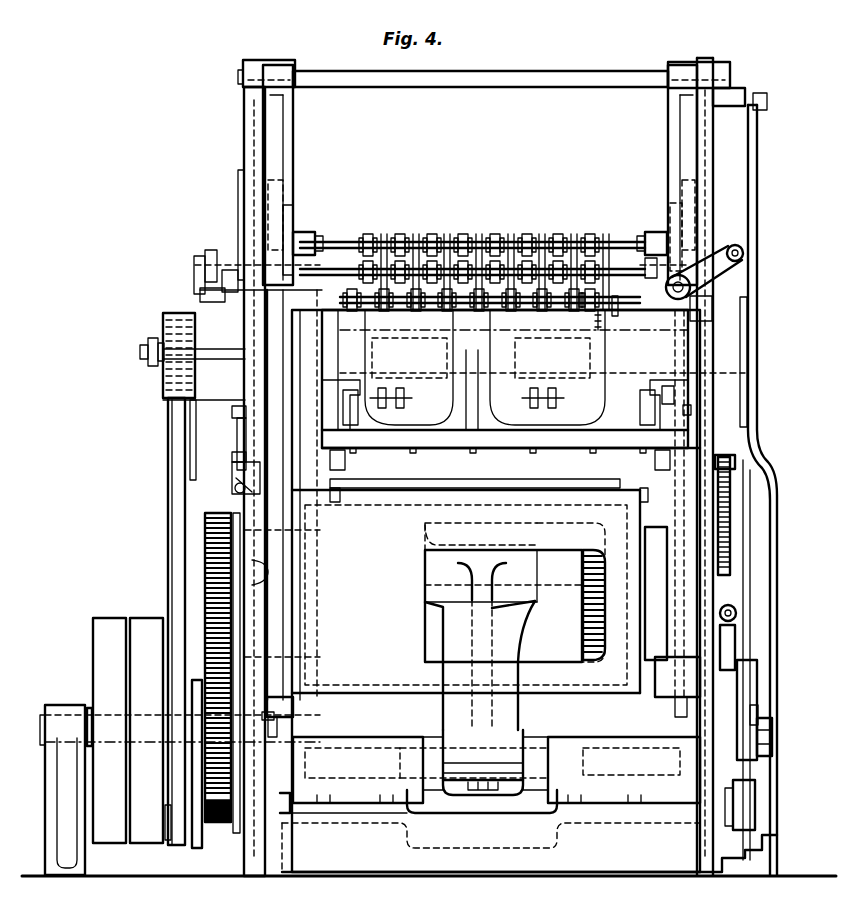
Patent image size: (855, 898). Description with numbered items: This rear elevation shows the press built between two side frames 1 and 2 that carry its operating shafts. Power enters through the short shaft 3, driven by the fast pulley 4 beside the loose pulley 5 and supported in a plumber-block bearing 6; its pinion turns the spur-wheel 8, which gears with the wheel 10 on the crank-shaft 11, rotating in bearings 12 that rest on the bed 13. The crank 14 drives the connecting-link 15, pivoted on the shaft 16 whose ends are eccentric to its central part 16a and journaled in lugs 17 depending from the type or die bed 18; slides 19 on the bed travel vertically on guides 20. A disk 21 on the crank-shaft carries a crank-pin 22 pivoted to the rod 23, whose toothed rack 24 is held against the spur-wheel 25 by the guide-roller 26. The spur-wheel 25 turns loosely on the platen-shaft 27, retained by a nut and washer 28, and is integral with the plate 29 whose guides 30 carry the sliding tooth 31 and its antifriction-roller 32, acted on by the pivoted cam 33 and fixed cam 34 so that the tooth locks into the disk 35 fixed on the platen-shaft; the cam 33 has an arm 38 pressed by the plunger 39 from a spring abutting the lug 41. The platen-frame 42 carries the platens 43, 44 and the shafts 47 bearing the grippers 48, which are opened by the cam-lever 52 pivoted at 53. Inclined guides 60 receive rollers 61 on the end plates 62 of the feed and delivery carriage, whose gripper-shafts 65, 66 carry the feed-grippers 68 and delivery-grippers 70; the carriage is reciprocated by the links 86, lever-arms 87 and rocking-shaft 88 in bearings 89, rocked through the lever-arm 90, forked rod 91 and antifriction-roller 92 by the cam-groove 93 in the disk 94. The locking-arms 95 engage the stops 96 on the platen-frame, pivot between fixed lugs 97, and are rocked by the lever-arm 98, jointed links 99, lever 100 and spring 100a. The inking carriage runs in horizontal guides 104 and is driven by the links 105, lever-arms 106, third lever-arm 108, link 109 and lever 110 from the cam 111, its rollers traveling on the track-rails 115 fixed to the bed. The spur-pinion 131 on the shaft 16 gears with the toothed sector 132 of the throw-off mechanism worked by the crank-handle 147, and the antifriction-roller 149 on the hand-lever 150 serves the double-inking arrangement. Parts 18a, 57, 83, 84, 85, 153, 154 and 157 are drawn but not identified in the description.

The side frame 1 is at (252, 125).
The side frame 2 is at (707, 136).
The short shaft 3 is at (90, 708).
The fast pulley 4 is at (146, 730).
The loose pulley 5 is at (109, 730).
The plumber-block bearing 6 is at (62, 708).
The spur-wheel 8 is at (216, 584).
The wheel 10 is at (214, 814).
The crank-shaft 11 is at (800, 746).
The bearings 12 is at (496, 770).
The bed 13 is at (491, 831).
The crank 14 is at (474, 763).
The connecting-link 15 is at (462, 636).
The shaft 16 is at (405, 575).
The central part of shaft 16a is at (514, 604).
The lugs or bearings 17 is at (404, 600).
The type or die bed 18 is at (466, 504).
The plate 18a is at (452, 480).
The slides 19 is at (292, 615).
The guides 20 is at (677, 677).
The disk 21 is at (196, 848).
The crank-pin 22 is at (168, 840).
The rod 23 is at (176, 556).
The toothed rack 24 is at (180, 427).
The spur-wheel 25 is at (178, 313).
The guide-roller 26 is at (172, 362).
The platen-shaft 27 is at (148, 350).
The nut and washer 28 is at (150, 357).
The disk or plate 29 is at (190, 401).
The guides 30 is at (200, 256).
The tooth or pawl 31 is at (212, 250).
The antifriction-roller 32 is at (228, 270).
The cam 33 is at (190, 430).
The cam 34 is at (210, 288).
The disk 35 is at (240, 414).
The arm 38 is at (235, 466).
The plunger or rod 39 is at (246, 492).
The lug 41 is at (234, 488).
The platen-frame 42 is at (505, 370).
The platen 43 is at (590, 246).
The platen 44 is at (586, 452).
The shaft 47 is at (400, 302).
The grippers 48 is at (492, 244).
The cam-lever 52 is at (690, 386).
The pivot 53 is at (692, 412).
The screw 57 is at (598, 328).
The inclined guides 60 is at (276, 196).
The rollers 61 is at (268, 238).
The end plates 62 is at (288, 226).
The gripper-shaft 65 is at (405, 246).
The gripper-shaft 66 is at (472, 246).
The feed-grippers 68 is at (370, 244).
The delivery-grippers 70 is at (533, 246).
The block 83 is at (296, 712).
The pin 84 is at (293, 722).
The pin 85 is at (280, 730).
The links 86 is at (308, 240).
The lever-arms 87 is at (290, 146).
The rocking-shaft 88 is at (460, 78).
The bearings 89 is at (258, 64).
The lever-arm 90 is at (728, 92).
The forked rod 91 is at (752, 150).
The antifriction-roller 92 is at (760, 706).
The cam-groove 93 is at (758, 796).
The disk 94 is at (760, 665).
The locking-arms 95 is at (652, 260).
The lugs or stops 96 is at (612, 304).
The fixed lugs 97 is at (700, 302).
The lever-arm 98 is at (736, 246).
The jointed links 99 is at (738, 610).
The lever 100 is at (738, 645).
The spring 100a is at (732, 540).
The horizontal guides 104 is at (315, 470).
The links 105 is at (352, 432).
The lever-arms 106 is at (348, 396).
The third lever-arm 108 is at (692, 290).
The link 109 is at (748, 312).
The lever 110 is at (745, 812).
The cam 111 is at (675, 710).
The track-rails 115 is at (335, 498).
The spur-pinion 131 is at (590, 566).
The toothed sector 132 is at (590, 640).
The crank-handle 147 is at (738, 466).
The antifriction-roller 149 is at (206, 540).
The hand-lever 150 is at (246, 212).
The lug 153 is at (240, 432).
The lug 154 is at (240, 456).
The shaft 157 is at (322, 242).